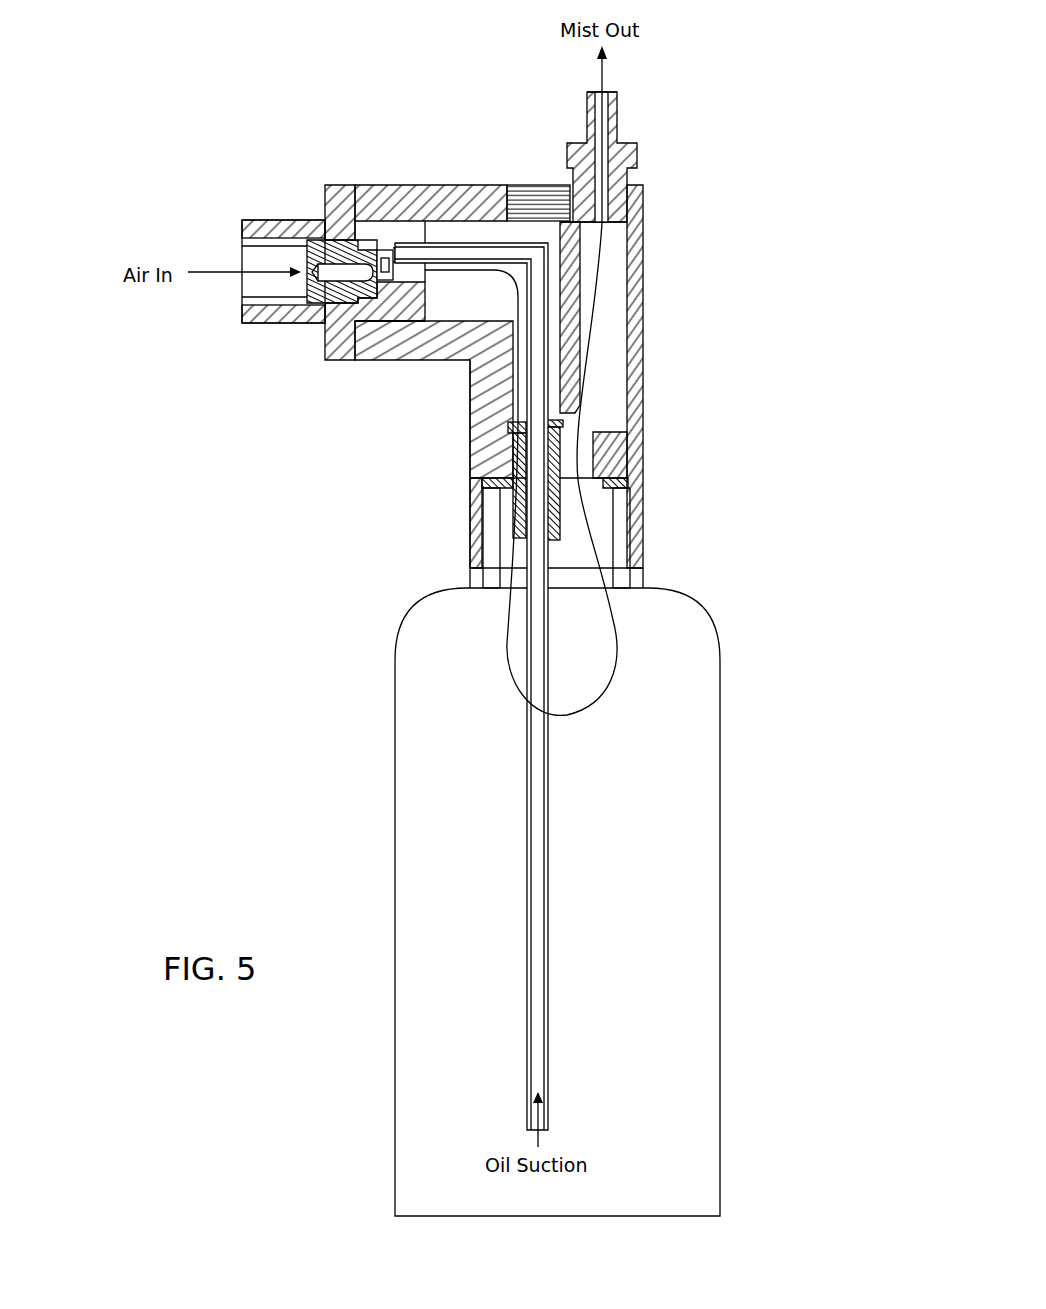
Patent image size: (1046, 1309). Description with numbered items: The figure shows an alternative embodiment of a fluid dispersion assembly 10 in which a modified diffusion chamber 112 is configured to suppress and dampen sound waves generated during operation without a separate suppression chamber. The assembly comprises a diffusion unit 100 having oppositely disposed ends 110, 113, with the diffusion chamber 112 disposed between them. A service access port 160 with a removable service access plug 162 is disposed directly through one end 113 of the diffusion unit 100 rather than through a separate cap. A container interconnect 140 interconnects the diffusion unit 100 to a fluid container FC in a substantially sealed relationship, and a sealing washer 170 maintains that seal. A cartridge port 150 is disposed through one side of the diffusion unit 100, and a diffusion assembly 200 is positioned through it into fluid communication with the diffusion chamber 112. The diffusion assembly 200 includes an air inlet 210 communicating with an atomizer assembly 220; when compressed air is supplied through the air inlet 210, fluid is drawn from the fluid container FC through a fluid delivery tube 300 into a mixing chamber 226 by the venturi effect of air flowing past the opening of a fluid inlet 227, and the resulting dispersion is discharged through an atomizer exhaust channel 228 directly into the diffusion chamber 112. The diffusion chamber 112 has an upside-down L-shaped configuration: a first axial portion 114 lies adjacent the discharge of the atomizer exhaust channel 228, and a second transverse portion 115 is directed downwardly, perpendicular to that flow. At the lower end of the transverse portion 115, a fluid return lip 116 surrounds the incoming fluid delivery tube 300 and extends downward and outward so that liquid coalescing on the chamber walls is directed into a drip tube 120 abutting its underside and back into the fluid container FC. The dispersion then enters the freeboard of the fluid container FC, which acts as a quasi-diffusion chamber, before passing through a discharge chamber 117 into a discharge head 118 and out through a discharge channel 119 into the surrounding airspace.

The fluid dispersion assembly 10 is at (203, 117).
The diffusion unit 100 is at (658, 392).
The end 110 is at (645, 442).
The diffusion chamber 112 is at (506, 307).
The end 113 is at (392, 185).
The first axial portion 114 is at (448, 305).
The second transverse portion 115 is at (517, 410).
The fluid return lip 116 is at (548, 427).
The discharge chamber 117 is at (620, 295).
The discharge head 118 is at (640, 155).
The discharge channel 119 is at (585, 93).
The drip tube 120 is at (513, 512).
The container interconnect 140 is at (645, 555).
The cartridge port 150 is at (378, 330).
The service access port 160 is at (516, 222).
The service access plug 162 is at (552, 224).
The sealing washer 170 is at (617, 487).
The diffusion assembly 200 is at (305, 339).
The air inlet 210 is at (242, 292).
The atomizer assembly 220 is at (313, 240).
The mixing chamber 226 is at (363, 247).
The fluid inlet 227 is at (382, 252).
The atomizer exhaust channel 228 is at (437, 260).
The fluid delivery tube 300 is at (538, 955).
The fluid container FC is at (395, 740).